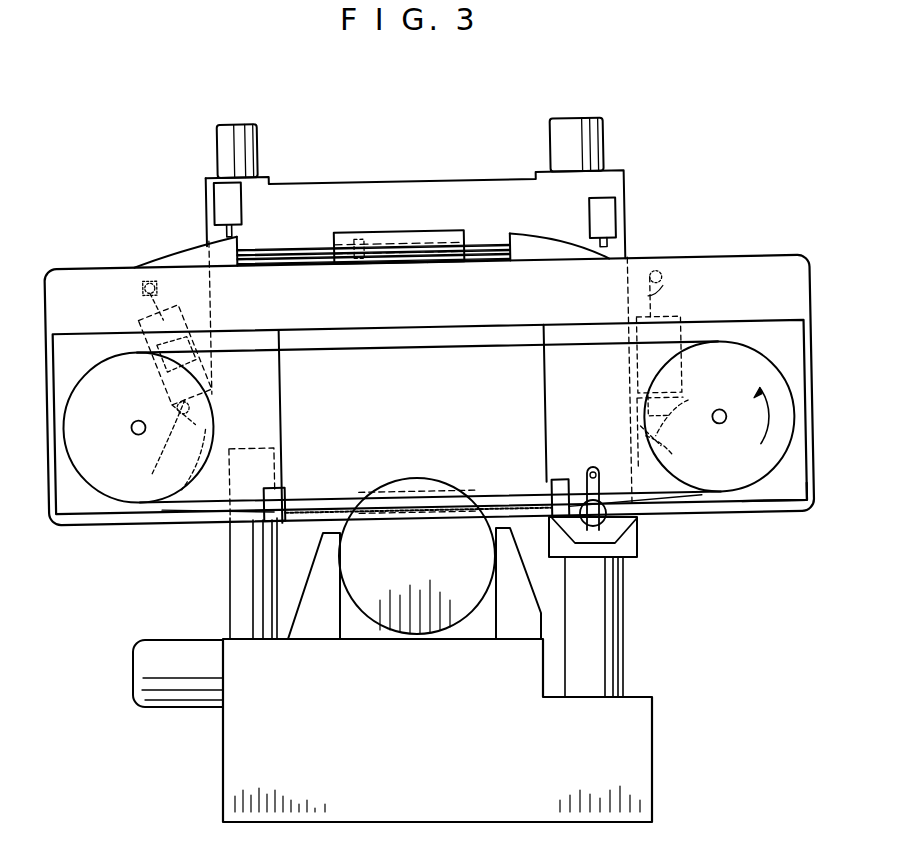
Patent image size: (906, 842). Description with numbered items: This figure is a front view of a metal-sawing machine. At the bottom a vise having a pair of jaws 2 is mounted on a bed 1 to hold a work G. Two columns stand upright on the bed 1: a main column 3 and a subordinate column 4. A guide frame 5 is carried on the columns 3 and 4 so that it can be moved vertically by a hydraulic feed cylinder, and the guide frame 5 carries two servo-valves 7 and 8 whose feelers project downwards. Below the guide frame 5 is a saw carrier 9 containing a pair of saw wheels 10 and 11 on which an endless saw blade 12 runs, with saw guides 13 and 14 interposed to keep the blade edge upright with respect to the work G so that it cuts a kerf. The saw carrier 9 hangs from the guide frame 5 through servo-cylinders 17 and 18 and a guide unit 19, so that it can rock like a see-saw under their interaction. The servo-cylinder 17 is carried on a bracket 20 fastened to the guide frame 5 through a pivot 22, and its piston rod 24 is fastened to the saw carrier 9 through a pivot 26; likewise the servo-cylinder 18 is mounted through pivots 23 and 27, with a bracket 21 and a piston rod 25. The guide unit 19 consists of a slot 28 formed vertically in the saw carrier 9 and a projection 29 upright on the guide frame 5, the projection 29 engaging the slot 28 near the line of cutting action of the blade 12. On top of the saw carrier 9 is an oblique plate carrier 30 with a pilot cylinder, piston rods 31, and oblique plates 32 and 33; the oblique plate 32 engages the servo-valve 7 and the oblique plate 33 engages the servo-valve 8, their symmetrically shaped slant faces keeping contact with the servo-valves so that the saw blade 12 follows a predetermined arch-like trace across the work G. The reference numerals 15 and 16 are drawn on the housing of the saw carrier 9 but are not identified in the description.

The bed 1 is at (225, 770).
The jaws 2 is at (305, 638).
The main column 3 is at (578, 122).
The subordinate column 4 is at (243, 125).
The guide frame 5 is at (498, 182).
The servo-valve 7 is at (220, 200).
The servo-valve 8 is at (615, 200).
The saw carrier 9 is at (786, 272).
The saw wheel 10 is at (117, 490).
The saw wheel 11 is at (740, 480).
The endless saw blade 12 is at (405, 338).
The saw guide 13 is at (285, 492).
The saw guide 14 is at (548, 487).
The left housing portion 15 is at (60, 430).
The housing bottom wall 16 is at (805, 512).
The servo-cylinder 17 is at (137, 323).
The servo-cylinder 18 is at (672, 318).
The guide unit 19 is at (698, 548).
The bracket 20 is at (185, 470).
The bracket 21 is at (674, 448).
The pivot 22 is at (162, 435).
The pivot 23 is at (688, 408).
The piston rod 24 is at (147, 305).
The piston rod 25 is at (668, 290).
The pivot 26 is at (150, 283).
The pivot 27 is at (660, 273).
The slot 28 is at (600, 484).
The projection 29 is at (602, 518).
The oblique plate carrier 30 is at (412, 233).
The piston rods 31 is at (300, 250).
The oblique plate 32 is at (185, 250).
The oblique plate 33 is at (528, 240).
The work G is at (418, 636).